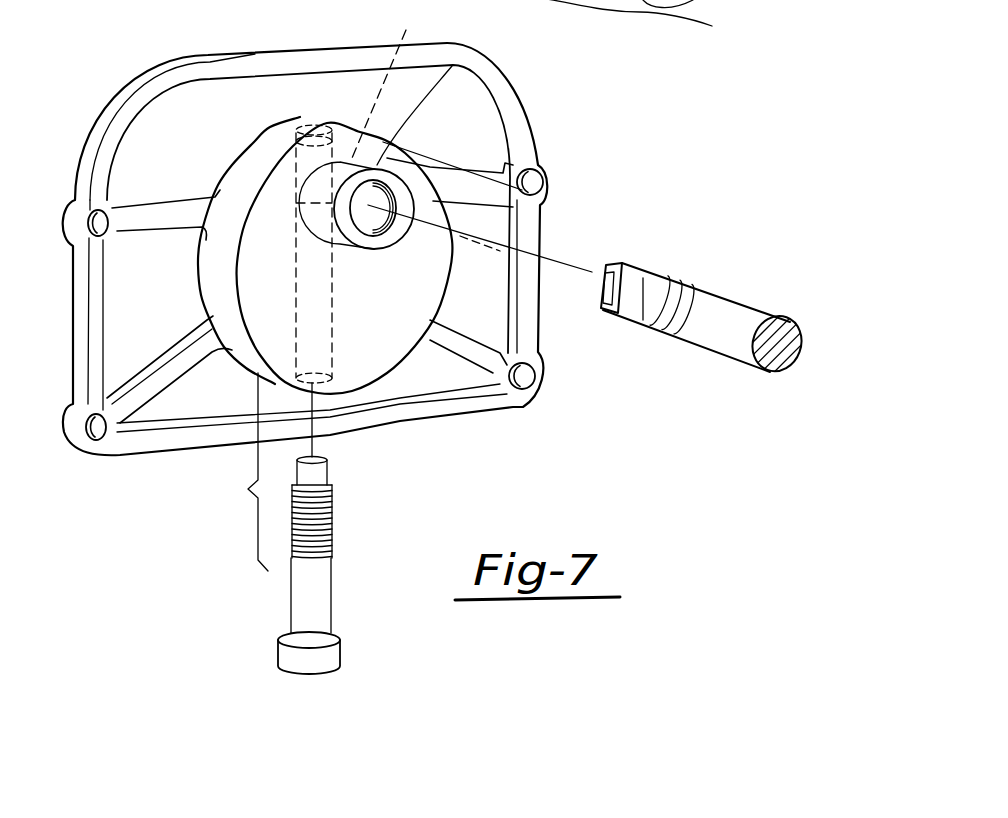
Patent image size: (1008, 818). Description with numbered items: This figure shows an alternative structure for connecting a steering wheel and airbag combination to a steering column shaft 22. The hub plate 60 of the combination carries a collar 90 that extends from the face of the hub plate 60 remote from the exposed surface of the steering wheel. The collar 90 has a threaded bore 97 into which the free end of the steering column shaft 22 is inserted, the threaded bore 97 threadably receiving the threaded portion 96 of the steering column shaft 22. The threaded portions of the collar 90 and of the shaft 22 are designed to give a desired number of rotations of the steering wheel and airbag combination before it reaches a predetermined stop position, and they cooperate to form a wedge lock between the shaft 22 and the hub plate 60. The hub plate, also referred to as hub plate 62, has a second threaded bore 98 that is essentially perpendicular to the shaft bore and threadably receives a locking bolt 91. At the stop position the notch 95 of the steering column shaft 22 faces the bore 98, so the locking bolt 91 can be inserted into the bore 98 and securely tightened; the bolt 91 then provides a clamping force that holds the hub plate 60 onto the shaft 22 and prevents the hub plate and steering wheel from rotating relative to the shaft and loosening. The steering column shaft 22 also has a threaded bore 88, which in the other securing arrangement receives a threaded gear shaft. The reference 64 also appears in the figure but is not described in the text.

The steering column shaft 22 is at (745, 306).
The hub plate 60 is at (506, 109).
The hub plate 62 is at (547, 181).
The bracket housing 64 is at (160, 478).
The threaded bore 88 is at (639, 21).
The collar 90 is at (386, 83).
The locking bolt 91 is at (318, 609).
The notch 95 is at (600, 303).
The threaded portion 96 is at (700, 287).
The threaded bore 97 is at (452, 66).
The second threaded bore 98 is at (333, 340).